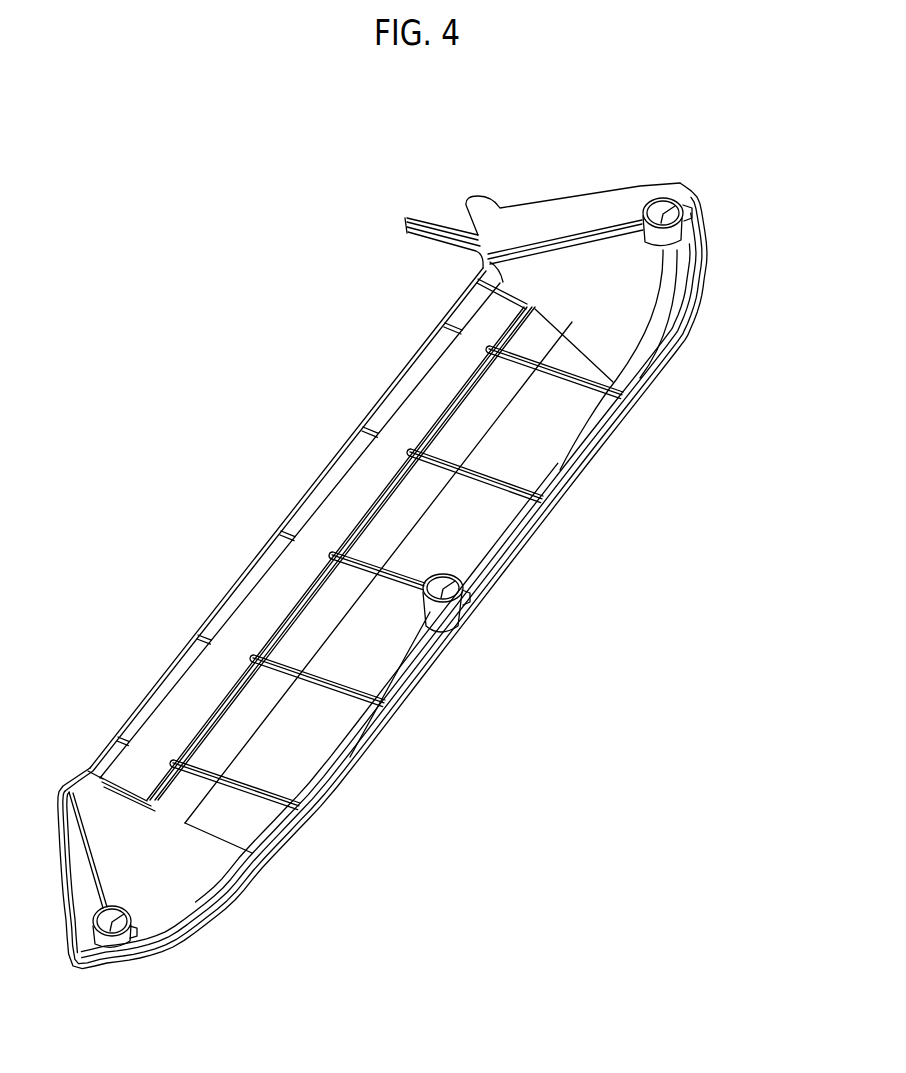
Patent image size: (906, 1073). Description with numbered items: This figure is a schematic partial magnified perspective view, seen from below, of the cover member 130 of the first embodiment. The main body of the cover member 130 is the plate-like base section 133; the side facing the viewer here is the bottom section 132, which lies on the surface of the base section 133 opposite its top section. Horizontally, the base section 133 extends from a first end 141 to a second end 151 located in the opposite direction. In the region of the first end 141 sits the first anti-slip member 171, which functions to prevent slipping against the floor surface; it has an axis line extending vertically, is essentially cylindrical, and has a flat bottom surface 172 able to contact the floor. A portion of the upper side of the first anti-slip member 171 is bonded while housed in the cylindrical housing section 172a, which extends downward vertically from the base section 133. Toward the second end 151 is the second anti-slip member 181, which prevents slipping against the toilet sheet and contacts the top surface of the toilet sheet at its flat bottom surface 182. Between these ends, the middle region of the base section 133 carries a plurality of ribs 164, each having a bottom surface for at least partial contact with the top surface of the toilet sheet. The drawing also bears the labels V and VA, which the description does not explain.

The cover member 130 is at (714, 205).
The bottom section 132 is at (622, 308).
The base section 133 is at (288, 757).
The first end 141 is at (414, 696).
The second end 151 is at (216, 600).
The ribs 164 is at (533, 500).
The first anti-slip member 171 is at (687, 248).
The bottom surface 172 is at (676, 187).
The cylindrical housing section 172a is at (645, 203).
The second anti-slip member 181 is at (442, 403).
The bottom surface 182 is at (408, 424).
The section line V is at (270, 527).
The section line VA is at (306, 475).